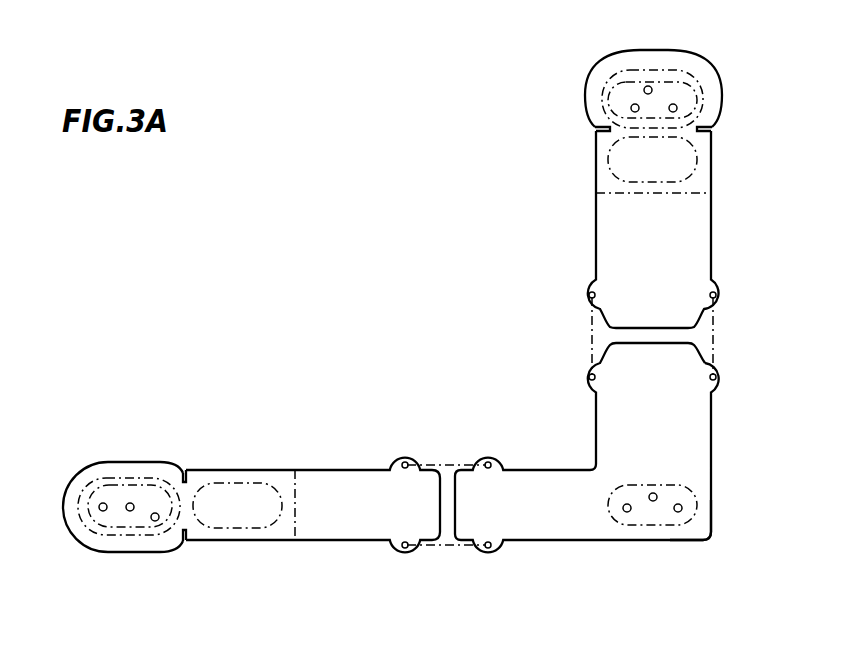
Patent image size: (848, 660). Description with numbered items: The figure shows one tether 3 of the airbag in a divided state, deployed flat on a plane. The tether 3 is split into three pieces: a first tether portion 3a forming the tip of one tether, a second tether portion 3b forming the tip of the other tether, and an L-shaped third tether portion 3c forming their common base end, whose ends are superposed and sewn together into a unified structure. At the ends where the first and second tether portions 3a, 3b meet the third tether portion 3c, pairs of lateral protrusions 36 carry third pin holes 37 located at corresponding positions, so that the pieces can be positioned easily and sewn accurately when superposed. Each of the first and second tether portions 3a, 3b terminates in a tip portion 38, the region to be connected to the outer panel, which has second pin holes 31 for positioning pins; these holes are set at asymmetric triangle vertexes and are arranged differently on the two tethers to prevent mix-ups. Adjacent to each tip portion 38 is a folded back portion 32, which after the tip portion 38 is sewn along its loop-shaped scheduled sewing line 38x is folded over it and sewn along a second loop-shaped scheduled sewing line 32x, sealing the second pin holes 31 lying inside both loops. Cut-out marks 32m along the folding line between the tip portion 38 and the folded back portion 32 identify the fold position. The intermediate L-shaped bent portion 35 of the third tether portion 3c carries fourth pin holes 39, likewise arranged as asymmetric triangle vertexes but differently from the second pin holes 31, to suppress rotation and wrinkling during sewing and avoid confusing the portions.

The tether 3 is at (396, 254).
The first tether portion 3a is at (596, 240).
The second tether portion 3b is at (340, 469).
The third tether portion 3c is at (596, 432).
The second pin holes 31 is at (649, 85).
The folded back portion 32 is at (597, 178).
The mark 32m is at (597, 128).
The scheduled sewing line 32x is at (699, 94).
The L-shaped bent portion 35 is at (712, 522).
The protrusions 36 is at (576, 295).
The third pin holes 37 is at (597, 295).
The tip portion 38 is at (585, 92).
The scheduled sewing line 38x is at (698, 78).
The fourth pin holes 39 is at (654, 501).